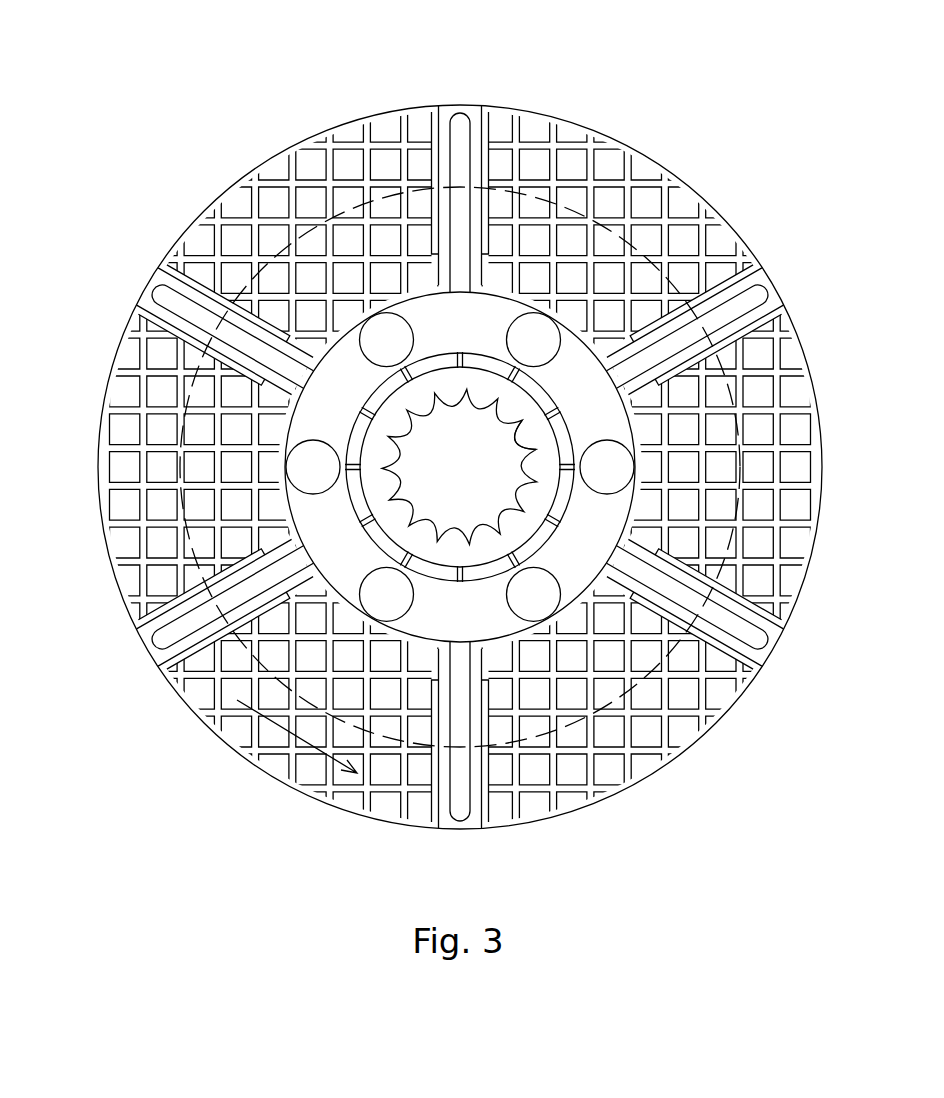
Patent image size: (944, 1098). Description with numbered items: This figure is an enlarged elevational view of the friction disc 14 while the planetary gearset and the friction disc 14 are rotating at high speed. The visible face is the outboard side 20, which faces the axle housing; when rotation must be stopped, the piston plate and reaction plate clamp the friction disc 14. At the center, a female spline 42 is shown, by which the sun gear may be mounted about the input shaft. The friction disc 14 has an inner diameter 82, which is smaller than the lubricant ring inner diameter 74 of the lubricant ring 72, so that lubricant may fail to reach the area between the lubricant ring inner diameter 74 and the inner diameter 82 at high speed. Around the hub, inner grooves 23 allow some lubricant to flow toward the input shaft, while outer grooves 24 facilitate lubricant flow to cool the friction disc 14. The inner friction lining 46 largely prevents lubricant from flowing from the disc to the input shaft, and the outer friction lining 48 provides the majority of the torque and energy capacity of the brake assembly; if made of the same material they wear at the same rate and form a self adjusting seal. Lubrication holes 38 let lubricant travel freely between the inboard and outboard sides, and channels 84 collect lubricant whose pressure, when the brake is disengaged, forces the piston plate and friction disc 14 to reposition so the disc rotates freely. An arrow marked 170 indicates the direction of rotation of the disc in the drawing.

The friction disc 14 is at (397, 106).
The outboard side 20 is at (123, 390).
The inner grooves 23 is at (350, 470).
The outer grooves 24 is at (792, 523).
The lubrication holes 38 is at (560, 594).
The female spline 42 is at (487, 532).
The inner friction lining 46 is at (352, 498).
The outer friction lining 48 is at (762, 430).
The lubricant ring 72 is at (288, 204).
The lubricant ring inner diameter 74 is at (186, 425).
The inner diameter 82 is at (520, 442).
The channels 84 is at (458, 205).
The rotation direction 170 is at (280, 740).